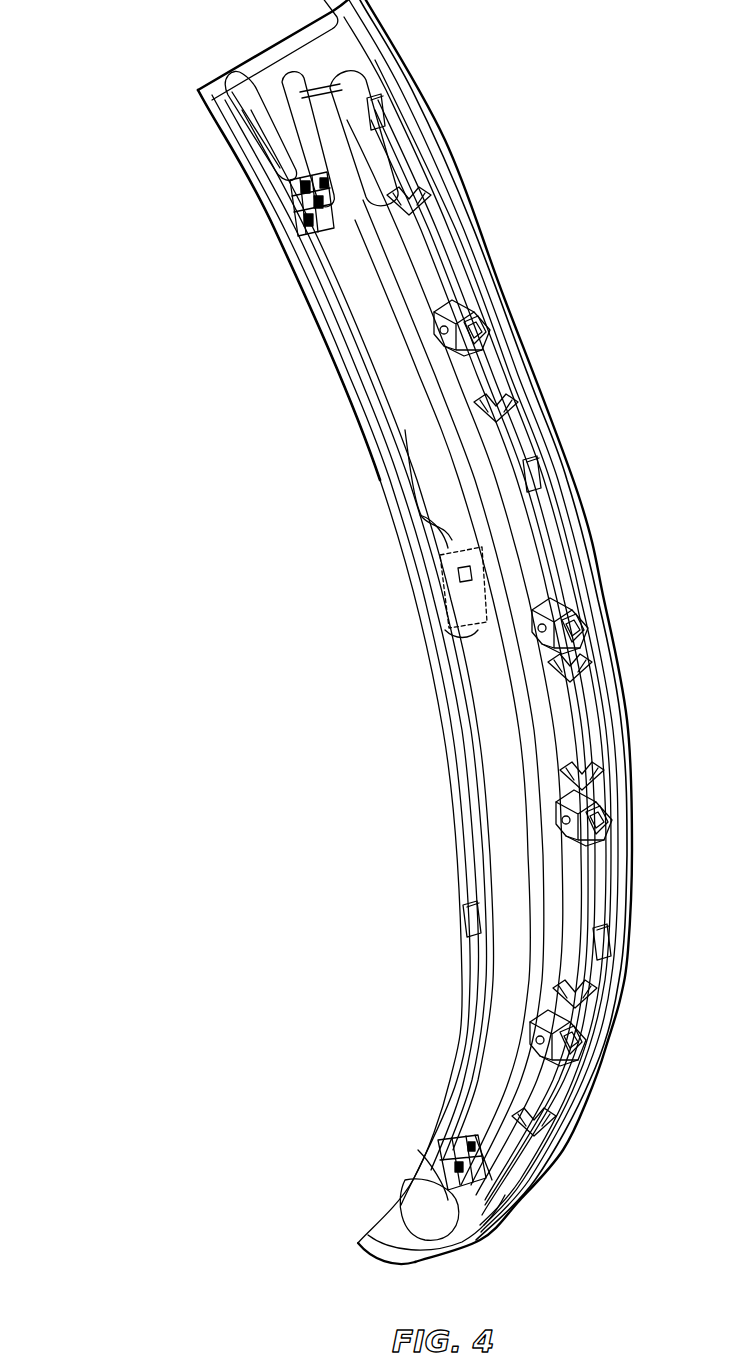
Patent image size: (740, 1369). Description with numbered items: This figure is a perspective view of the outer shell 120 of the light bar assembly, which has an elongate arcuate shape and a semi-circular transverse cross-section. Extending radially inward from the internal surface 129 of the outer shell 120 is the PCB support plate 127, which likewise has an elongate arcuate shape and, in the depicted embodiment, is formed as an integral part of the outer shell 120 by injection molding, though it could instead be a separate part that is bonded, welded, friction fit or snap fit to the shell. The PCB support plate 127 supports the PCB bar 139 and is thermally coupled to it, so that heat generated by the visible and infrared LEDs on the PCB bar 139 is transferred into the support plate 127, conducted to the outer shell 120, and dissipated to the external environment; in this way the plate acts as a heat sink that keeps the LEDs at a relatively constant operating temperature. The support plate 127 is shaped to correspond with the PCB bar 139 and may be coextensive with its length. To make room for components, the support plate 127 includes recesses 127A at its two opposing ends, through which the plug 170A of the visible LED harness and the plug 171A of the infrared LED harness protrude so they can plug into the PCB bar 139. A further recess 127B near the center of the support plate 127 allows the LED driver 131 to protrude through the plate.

The outer shell 120 is at (192, 165).
The PCB support plate 127 is at (415, 430).
The recesses 127A is at (298, 246).
The recess 127B is at (456, 611).
The internal surface 129 is at (478, 458).
The LED driver 131 is at (440, 565).
The PCB bar 139 is at (284, 173).
The plug 170A is at (298, 241).
The plug 171A is at (447, 1163).